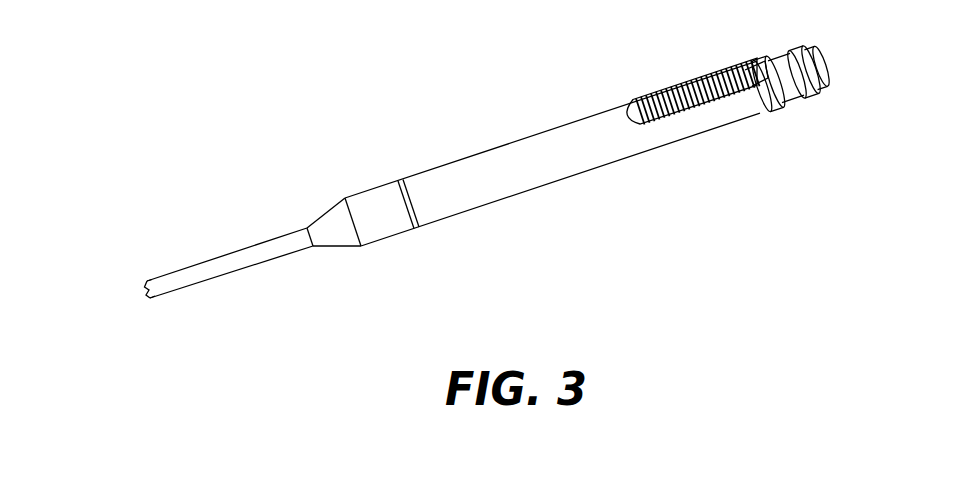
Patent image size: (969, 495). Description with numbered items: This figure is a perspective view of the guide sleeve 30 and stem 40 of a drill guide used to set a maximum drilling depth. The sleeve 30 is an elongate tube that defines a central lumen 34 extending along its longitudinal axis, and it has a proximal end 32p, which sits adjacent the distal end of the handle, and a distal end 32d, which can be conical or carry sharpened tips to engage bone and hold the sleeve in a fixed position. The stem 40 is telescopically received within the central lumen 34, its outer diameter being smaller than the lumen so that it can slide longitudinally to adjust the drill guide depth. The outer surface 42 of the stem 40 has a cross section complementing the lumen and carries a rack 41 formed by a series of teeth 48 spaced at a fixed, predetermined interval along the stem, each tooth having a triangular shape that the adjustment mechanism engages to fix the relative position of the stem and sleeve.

The guide sleeve 30 is at (503, 165).
The distal end of the sleeve 32d is at (147, 290).
The central lumen 34 is at (143, 280).
The rack 41 is at (737, 54).
The teeth 48 is at (741, 100).
The proximal end of the sleeve 32p is at (680, 115).
The stem 40 is at (753, 106).
The outer surface of the stem 42 is at (772, 108).